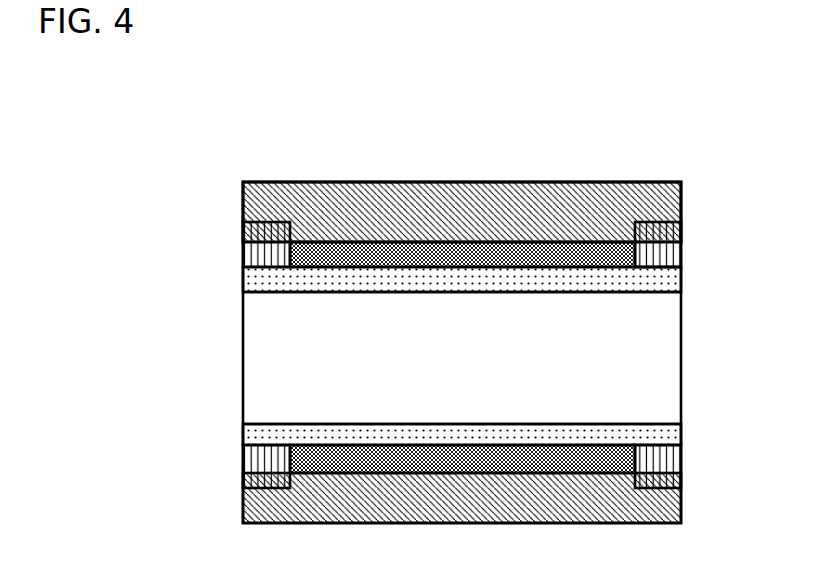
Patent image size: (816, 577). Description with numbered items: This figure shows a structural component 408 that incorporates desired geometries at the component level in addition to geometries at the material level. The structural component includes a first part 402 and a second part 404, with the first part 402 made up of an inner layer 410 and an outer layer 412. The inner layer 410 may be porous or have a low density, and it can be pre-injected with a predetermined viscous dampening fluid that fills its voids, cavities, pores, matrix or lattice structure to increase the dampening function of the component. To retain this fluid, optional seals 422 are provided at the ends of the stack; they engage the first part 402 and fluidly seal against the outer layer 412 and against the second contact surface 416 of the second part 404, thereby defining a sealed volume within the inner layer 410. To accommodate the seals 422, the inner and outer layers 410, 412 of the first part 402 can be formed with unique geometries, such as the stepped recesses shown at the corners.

The first part 402 is at (212, 182).
The second part 404 is at (385, 277).
The electrochemical device 408 is at (168, 347).
The inner layer 410 is at (445, 257).
The outer layer 412 is at (358, 208).
The second contact surface 416 is at (653, 267).
The seals 422 is at (667, 243).